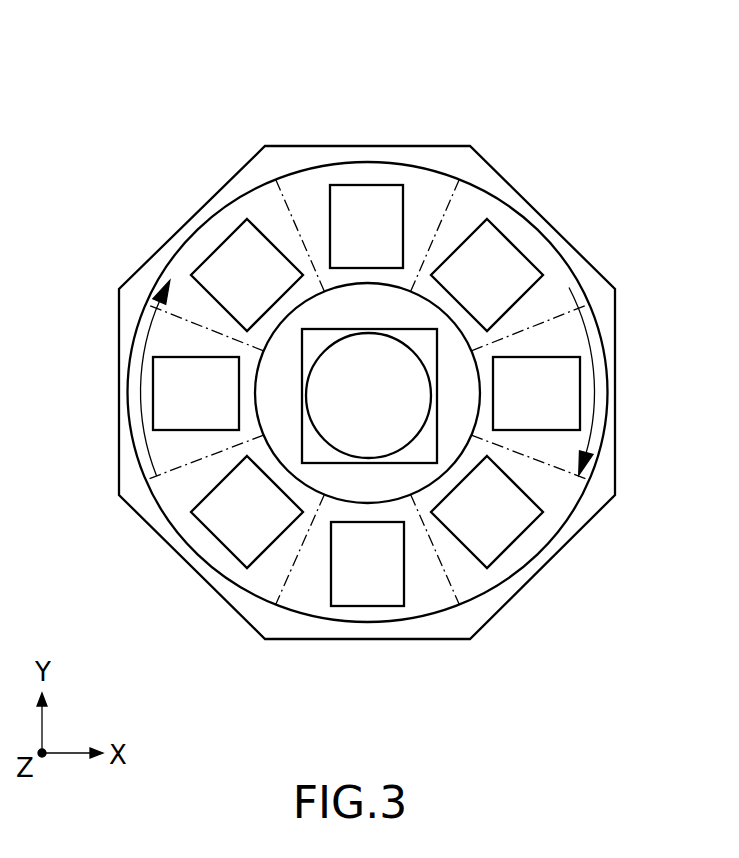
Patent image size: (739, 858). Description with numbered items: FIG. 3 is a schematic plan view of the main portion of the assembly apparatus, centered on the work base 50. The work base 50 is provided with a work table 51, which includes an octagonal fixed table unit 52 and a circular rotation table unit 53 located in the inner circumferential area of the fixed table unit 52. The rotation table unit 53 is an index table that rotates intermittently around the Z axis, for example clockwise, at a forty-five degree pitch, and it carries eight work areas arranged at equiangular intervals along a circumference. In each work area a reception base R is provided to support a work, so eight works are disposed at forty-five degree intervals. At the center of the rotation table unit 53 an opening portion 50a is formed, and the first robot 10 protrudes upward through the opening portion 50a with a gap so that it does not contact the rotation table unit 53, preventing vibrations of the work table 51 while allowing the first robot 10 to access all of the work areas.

The first robot 10 is at (316, 329).
The work base 50 is at (627, 125).
The opening portion 50a is at (470, 421).
The work table 51 is at (535, 37).
The fixed table unit 52 is at (497, 182).
The rotation table unit 53 is at (445, 175).
The reception base R is at (212, 247).